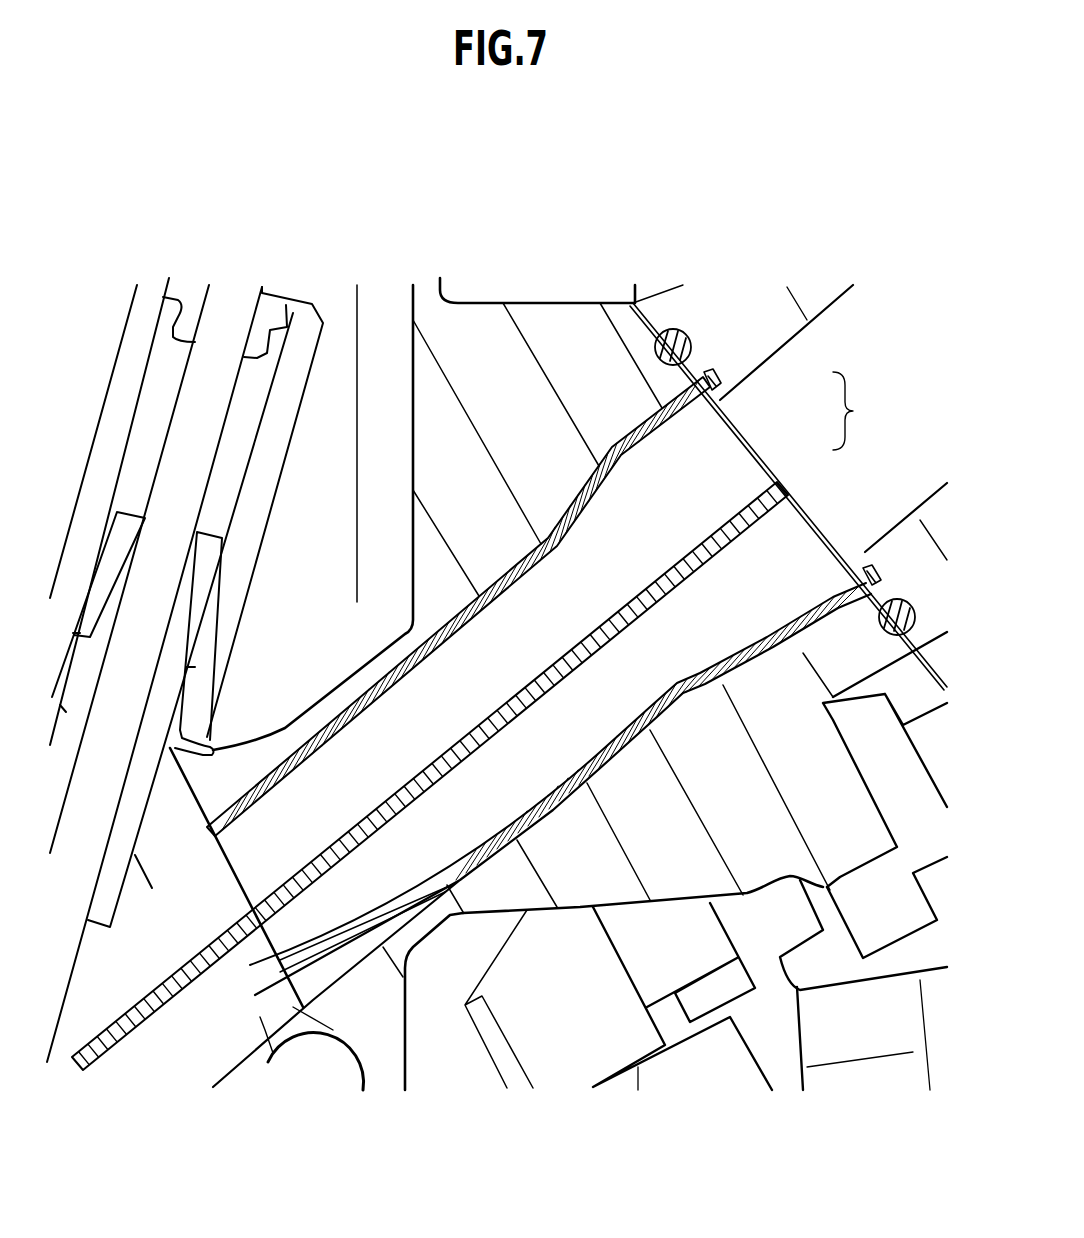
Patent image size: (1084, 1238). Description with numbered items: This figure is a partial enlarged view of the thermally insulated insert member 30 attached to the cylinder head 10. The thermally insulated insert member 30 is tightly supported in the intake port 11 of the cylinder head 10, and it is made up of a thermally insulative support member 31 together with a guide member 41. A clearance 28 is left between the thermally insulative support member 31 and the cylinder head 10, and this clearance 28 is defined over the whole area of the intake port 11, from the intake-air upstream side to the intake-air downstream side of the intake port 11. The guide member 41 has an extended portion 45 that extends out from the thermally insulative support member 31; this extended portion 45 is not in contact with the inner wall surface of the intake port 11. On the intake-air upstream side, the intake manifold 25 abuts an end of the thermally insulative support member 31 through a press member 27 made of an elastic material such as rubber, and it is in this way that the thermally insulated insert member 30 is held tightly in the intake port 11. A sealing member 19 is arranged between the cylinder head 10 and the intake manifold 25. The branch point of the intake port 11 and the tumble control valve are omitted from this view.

The cylinder head 10 is at (562, 320).
The intake port 11 is at (282, 1020).
The sealing member 19 is at (668, 330).
The intake manifold 25 is at (773, 300).
The press member 27 is at (722, 368).
The clearance 28 is at (510, 567).
The thermally insulated insert member 30 is at (482, 721).
The thermally insulative support member 31 is at (655, 438).
The guide member 41 is at (753, 497).
The extended portion 45 is at (190, 986).